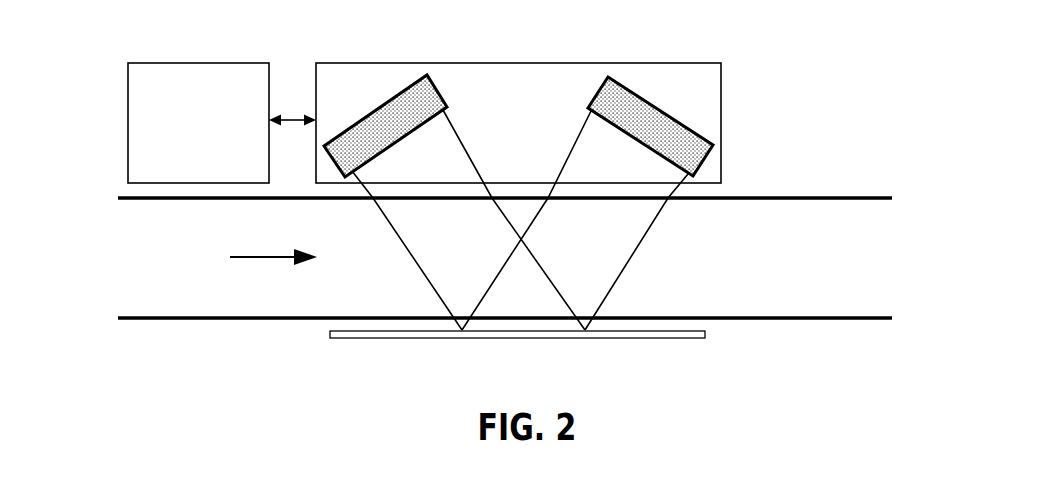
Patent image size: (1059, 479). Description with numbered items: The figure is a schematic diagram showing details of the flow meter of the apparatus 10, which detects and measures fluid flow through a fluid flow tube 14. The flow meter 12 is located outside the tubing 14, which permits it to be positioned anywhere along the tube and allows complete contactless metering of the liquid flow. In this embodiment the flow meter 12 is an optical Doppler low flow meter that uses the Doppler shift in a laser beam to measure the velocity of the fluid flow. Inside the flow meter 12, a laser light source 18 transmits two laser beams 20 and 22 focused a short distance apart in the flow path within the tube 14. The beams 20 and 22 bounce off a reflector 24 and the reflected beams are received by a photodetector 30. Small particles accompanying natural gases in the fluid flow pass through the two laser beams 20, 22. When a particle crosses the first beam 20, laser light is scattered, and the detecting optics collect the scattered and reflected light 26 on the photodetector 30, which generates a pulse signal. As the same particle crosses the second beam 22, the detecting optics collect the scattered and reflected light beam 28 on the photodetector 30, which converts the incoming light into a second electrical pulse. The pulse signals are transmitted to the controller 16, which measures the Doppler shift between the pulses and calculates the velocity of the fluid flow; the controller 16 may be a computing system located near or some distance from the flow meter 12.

The apparatus 10 is at (490, 26).
The flow meter 12 is at (505, 134).
The fluid flow tube 14 is at (798, 197).
The controller 16 is at (182, 152).
The laser light source 18 is at (668, 110).
The first laser beam 20 is at (621, 270).
The second laser beam 22 is at (536, 212).
The reflector 24 is at (680, 339).
The scattered and reflected light 26 is at (503, 212).
The scattered and reflected light beam 28 is at (423, 275).
The photodetector 30 is at (377, 109).